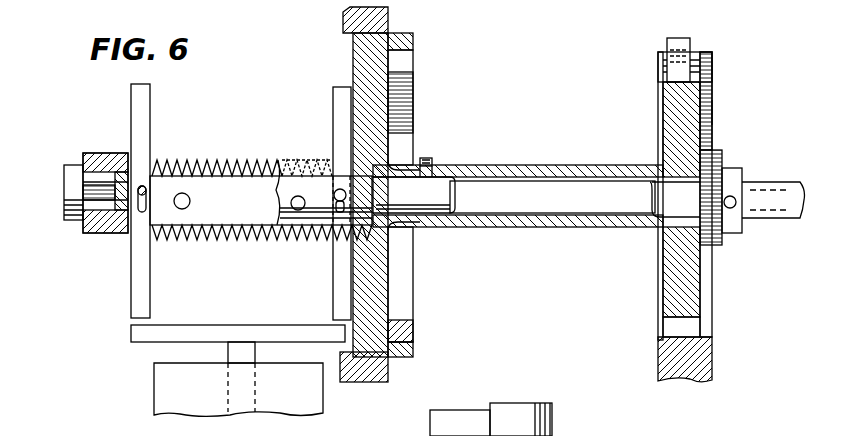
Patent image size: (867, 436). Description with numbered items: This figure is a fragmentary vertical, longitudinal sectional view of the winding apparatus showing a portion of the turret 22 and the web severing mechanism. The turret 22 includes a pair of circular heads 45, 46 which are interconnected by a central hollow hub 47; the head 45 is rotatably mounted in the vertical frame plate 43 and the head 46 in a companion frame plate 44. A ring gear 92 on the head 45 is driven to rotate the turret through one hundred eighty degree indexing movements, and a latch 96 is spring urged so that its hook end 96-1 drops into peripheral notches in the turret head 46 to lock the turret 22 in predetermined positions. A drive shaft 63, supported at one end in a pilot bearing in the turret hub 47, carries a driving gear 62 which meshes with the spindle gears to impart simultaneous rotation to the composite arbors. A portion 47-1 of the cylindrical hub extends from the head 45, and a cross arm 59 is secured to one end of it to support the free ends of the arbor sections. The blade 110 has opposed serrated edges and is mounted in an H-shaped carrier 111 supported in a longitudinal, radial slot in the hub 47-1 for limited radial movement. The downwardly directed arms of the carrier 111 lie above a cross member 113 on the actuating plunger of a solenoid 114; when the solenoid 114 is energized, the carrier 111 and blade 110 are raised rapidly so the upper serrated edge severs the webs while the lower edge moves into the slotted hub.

The turret 22 is at (724, 116).
The vertical frame plate 43 is at (350, 22).
The companion frame plate 44 is at (712, 68).
The circular head 45 is at (368, 58).
The circular head 46 is at (676, 117).
The central hollow hub 47 is at (575, 165).
The hub portion 47-1 is at (232, 140).
The cross arm 59 is at (98, 152).
The driving gear 62 is at (722, 158).
The drive shaft 63 is at (770, 212).
The ring gear 92 is at (395, 33).
The latch 96 is at (678, 37).
The hook end 96-1 is at (677, 70).
The blade 110 is at (212, 242).
The H-shaped carrier 111 is at (130, 276).
The cross member 113 is at (150, 340).
The solenoid 114 is at (175, 385).